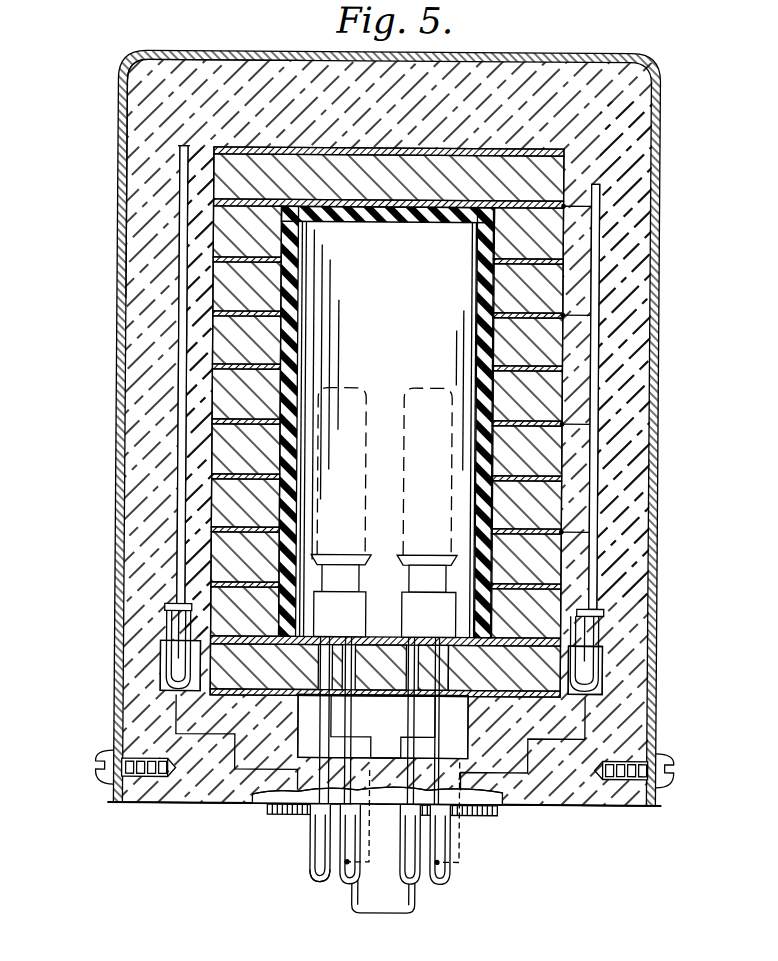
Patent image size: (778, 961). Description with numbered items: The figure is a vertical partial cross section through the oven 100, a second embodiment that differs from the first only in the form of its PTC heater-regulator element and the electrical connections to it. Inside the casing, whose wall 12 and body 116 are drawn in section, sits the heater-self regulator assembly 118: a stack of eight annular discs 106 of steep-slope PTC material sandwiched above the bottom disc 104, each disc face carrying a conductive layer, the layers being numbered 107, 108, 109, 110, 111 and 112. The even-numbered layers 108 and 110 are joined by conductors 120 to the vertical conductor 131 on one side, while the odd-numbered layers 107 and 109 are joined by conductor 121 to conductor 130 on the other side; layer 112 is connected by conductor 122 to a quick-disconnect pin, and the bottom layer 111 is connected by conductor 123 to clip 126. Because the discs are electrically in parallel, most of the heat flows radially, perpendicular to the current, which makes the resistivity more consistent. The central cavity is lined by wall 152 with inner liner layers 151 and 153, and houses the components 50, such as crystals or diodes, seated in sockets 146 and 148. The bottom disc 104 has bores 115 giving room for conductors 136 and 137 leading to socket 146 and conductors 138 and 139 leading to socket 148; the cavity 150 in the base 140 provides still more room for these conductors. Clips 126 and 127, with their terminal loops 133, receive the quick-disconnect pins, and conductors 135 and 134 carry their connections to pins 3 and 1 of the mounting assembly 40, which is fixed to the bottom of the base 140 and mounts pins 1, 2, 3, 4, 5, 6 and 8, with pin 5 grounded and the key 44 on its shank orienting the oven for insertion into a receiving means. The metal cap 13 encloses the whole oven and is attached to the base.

The oven 100 is at (93, 78).
The casing wall 12 is at (120, 205).
The casing body 116 is at (620, 128).
The conductive layer 107 is at (340, 148).
The heater-self regulator assembly 118 is at (457, 146).
The conductive layer 108 is at (420, 197).
The conductive layer 109 is at (244, 252).
The annular discs 106 is at (226, 293).
The conductive layer 110 is at (528, 307).
The conductive layer 112 is at (514, 630).
The shield wall 152 is at (338, 226).
The glass envelope wall 151 is at (478, 245).
The inner glass layer 153 is at (478, 291).
The components 50 is at (342, 388).
The socket 146 is at (328, 618).
The socket 148 is at (416, 618).
The bottom disc 104 is at (248, 676).
The bottom layer 111 is at (494, 688).
The bores 115 is at (412, 666).
The conductor 121 is at (212, 148).
The conductor 130 is at (186, 218).
The conductors 120 is at (592, 203).
The conductor 131 is at (600, 222).
The conductor 122 is at (600, 628).
The clip 126 is at (166, 674).
The clip 127 is at (602, 660).
The terminal loop 133 is at (168, 668).
The conductor 123 is at (218, 694).
The conductor 135 is at (237, 736).
The conductor 134 is at (560, 740).
The cavity 150 is at (302, 745).
The conductor 136 is at (332, 726).
The conductor 137 is at (360, 728).
The conductor 138 is at (413, 710).
The conductor 139 is at (424, 722).
The base 140 is at (232, 802).
The metal cap 13 is at (98, 760).
The mounting assembly 40 is at (516, 838).
The key 44 is at (418, 896).
The pin 1 is at (453, 886).
The pin 2 is at (401, 890).
The pin 3 is at (352, 900).
The pin 4 is at (313, 878).
The pin 5 is at (313, 840).
The pin 6 is at (342, 888).
The pin 8 is at (455, 877).